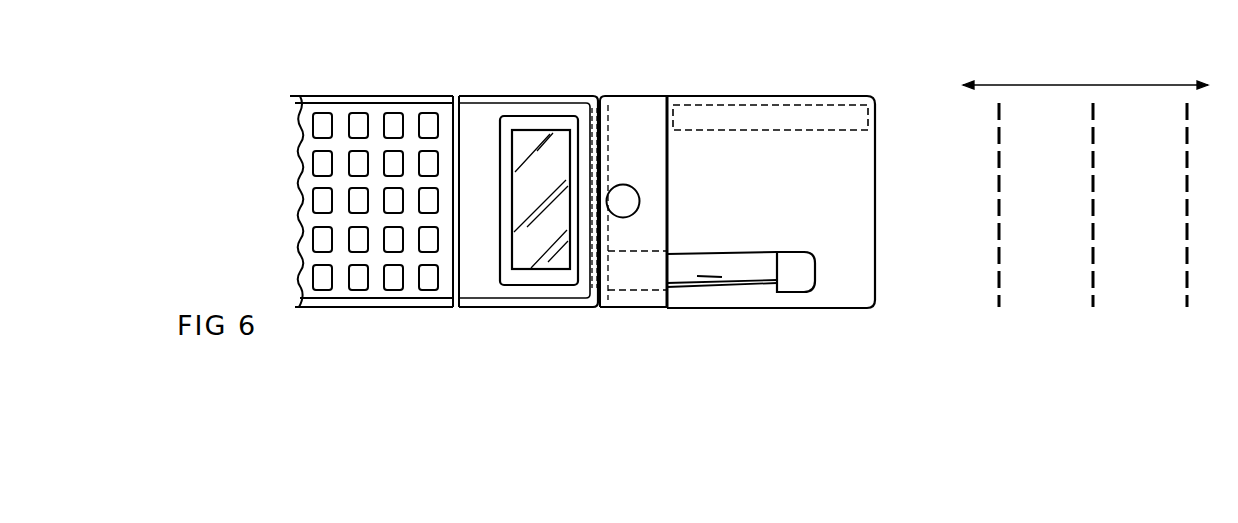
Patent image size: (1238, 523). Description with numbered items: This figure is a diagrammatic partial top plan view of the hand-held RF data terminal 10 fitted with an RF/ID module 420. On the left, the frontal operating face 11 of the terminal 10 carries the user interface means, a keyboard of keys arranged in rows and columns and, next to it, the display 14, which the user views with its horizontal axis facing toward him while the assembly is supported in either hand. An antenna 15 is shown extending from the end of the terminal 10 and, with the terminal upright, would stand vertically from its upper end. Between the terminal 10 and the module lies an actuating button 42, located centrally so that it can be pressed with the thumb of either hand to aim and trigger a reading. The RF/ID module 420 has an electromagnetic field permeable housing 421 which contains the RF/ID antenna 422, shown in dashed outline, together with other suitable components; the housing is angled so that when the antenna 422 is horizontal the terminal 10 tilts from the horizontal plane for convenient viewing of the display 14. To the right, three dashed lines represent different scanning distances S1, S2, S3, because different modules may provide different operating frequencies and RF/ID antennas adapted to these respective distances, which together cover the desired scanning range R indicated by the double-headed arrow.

The RF data terminal 10 is at (368, 313).
The frontal operating face 11 is at (313, 181).
The display 14 is at (527, 262).
The antenna 15 is at (705, 281).
The actuating button 42 is at (623, 200).
The RF/ID module 420 is at (711, 93).
The electromagnetic field permeable housing 421 is at (755, 310).
The RF/ID antenna 422 is at (803, 105).
The scanning range R is at (1050, 85).
The first scanning distance S1 is at (1000, 300).
The second scanning distance S2 is at (1094, 300).
The third scanning distance S3 is at (1188, 300).